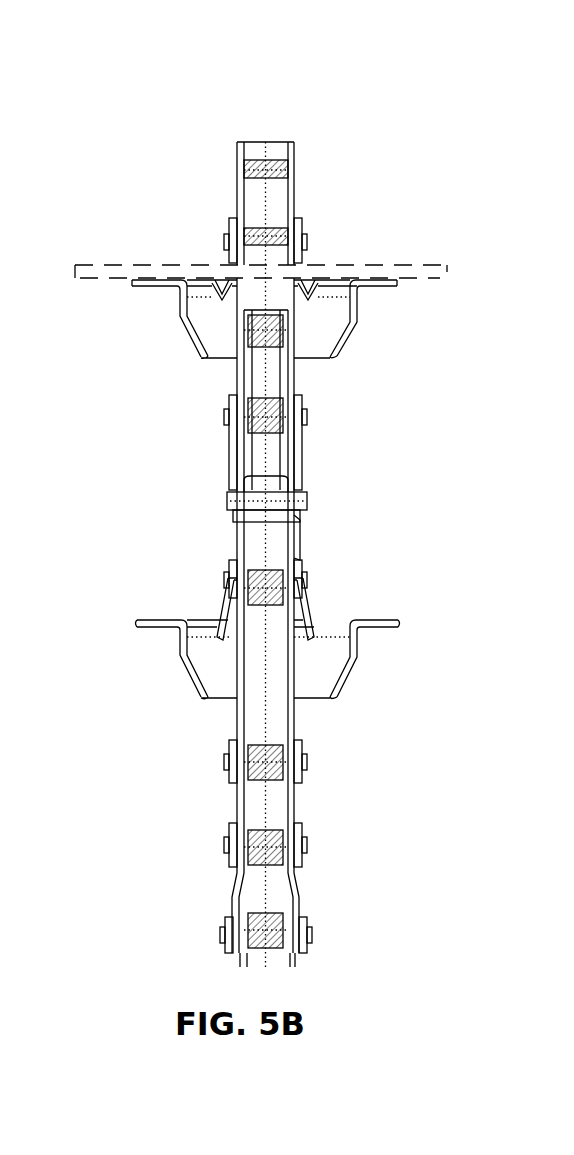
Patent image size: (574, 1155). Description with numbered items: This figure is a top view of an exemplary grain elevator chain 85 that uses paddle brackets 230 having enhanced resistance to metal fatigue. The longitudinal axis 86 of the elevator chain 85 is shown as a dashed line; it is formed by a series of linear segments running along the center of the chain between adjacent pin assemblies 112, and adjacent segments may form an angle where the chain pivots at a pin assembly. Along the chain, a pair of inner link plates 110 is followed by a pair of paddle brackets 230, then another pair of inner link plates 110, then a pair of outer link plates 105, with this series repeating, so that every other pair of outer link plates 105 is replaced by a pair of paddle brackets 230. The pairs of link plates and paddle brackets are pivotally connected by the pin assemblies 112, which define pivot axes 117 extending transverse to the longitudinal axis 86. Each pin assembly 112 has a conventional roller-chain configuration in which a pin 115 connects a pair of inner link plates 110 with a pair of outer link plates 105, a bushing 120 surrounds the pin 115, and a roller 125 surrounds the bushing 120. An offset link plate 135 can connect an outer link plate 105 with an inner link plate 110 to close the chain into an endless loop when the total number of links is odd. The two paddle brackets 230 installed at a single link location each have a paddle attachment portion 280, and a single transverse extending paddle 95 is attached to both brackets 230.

The elevator chain 85 is at (182, 126).
The longitudinal axis 86 is at (265, 142).
The paddle 95 is at (358, 265).
The outer link plate 105 is at (237, 445).
The inner link plate 110 is at (237, 205).
The pin assembly 112 is at (256, 590).
The pin 115 is at (307, 497).
The pivot axis 117 is at (237, 417).
The bushing 120 is at (288, 484).
The roller 125 is at (299, 549).
The offset link plate 135 is at (237, 892).
The paddle bracket 230 is at (172, 322).
The paddle attachment portion 280 is at (167, 620).